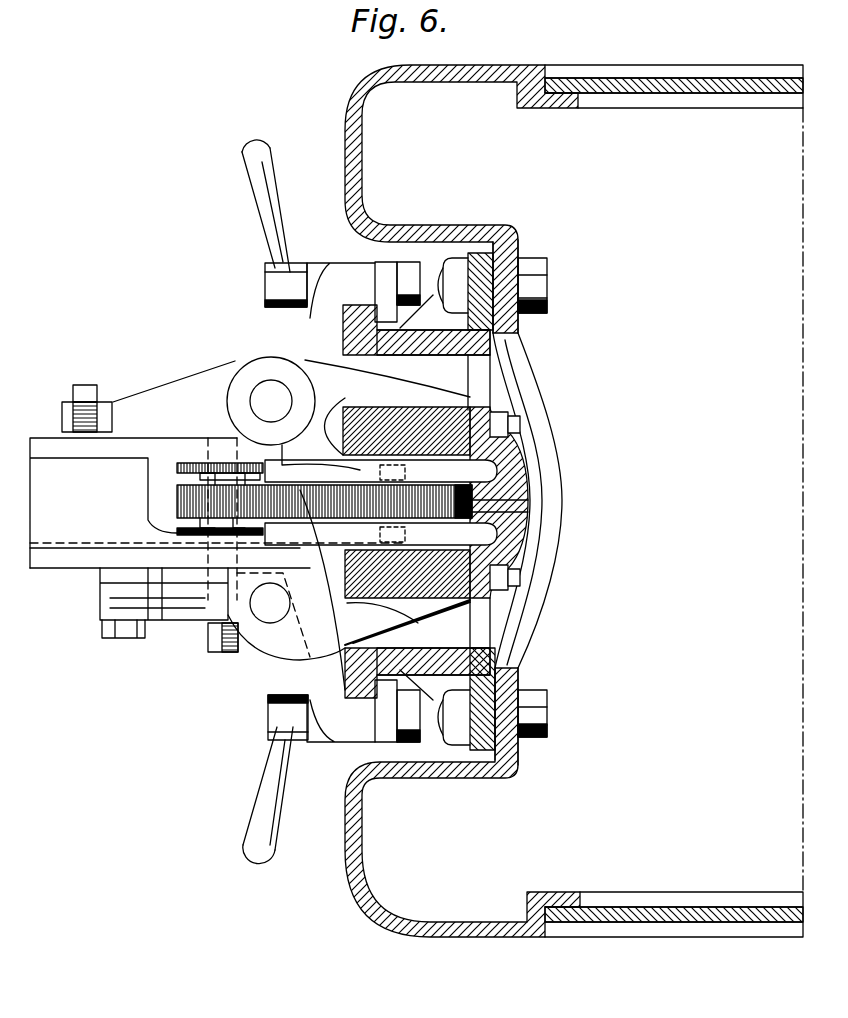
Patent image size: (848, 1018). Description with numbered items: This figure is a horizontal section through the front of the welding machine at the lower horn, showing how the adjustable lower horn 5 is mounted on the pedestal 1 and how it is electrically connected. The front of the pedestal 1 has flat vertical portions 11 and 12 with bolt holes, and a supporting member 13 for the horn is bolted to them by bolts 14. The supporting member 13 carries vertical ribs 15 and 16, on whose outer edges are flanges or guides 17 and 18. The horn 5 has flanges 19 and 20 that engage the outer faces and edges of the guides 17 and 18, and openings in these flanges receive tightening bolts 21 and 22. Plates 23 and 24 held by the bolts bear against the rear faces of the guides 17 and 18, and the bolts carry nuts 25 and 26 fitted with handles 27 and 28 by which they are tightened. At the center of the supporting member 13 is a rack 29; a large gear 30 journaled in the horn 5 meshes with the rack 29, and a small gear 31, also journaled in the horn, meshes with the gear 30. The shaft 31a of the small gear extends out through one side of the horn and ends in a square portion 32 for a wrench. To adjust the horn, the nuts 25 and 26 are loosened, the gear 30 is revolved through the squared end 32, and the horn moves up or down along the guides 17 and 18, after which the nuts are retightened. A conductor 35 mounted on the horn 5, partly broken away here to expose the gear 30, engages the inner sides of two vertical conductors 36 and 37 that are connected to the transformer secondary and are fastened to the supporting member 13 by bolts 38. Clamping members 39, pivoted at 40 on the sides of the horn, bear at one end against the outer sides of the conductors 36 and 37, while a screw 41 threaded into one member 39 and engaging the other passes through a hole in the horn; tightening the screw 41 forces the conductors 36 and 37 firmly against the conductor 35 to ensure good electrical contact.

The pedestal 1 is at (360, 108).
The lower horn 5 is at (62, 560).
The flat vertical portion 11 is at (508, 255).
The flat vertical portion 12 is at (508, 750).
The supporting member 13 is at (480, 268).
The bolts 14 is at (548, 287).
The vertical rib 15 is at (423, 658).
The vertical rib 16 is at (447, 350).
The flange or guide 17 is at (365, 700).
The flange or guide 18 is at (360, 308).
The flange 19 is at (322, 742).
The flange 20 is at (318, 268).
The tightening bolt 21 is at (412, 736).
The tightening bolt 22 is at (405, 283).
The plate 23 is at (388, 730).
The plate 24 is at (387, 270).
The nut 25 is at (272, 713).
The nut 26 is at (268, 290).
The handle 27 is at (258, 808).
The handle 28 is at (258, 183).
The rack 29 is at (490, 498).
The gear 30 is at (500, 520).
The small gear 31 is at (177, 503).
The shaft 31a is at (200, 476).
The square portion 32 is at (213, 638).
The conductor 35 is at (217, 519).
The vertical conductor 36 is at (401, 586).
The vertical conductor 37 is at (384, 418).
The bolts 38 is at (513, 425).
The clamping member 39 is at (335, 635).
The pivot 40 is at (270, 388).
The screw 41 is at (77, 387).